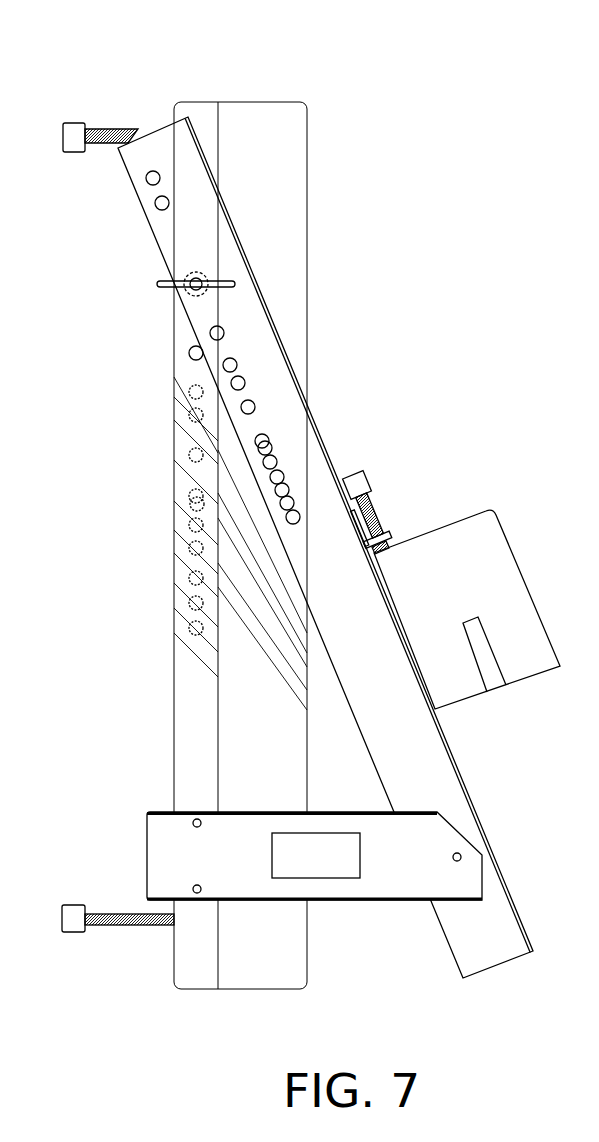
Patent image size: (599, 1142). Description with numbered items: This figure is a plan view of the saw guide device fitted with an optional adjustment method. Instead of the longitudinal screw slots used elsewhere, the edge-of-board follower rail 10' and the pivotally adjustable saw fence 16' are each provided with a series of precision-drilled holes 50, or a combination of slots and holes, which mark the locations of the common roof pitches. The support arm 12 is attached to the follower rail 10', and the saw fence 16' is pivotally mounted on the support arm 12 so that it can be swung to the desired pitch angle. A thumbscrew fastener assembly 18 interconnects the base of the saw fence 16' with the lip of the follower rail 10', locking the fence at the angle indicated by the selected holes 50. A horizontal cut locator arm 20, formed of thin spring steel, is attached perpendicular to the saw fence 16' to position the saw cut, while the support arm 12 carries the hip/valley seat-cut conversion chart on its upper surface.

The follower rail 10' is at (253, 499).
The support arm 12 is at (158, 832).
The saw fence 16' is at (329, 566).
The thumbscrew fastener assembly 18 is at (190, 277).
The cut locator arm 20 is at (483, 530).
The precision-drilled holes 50 is at (210, 464).